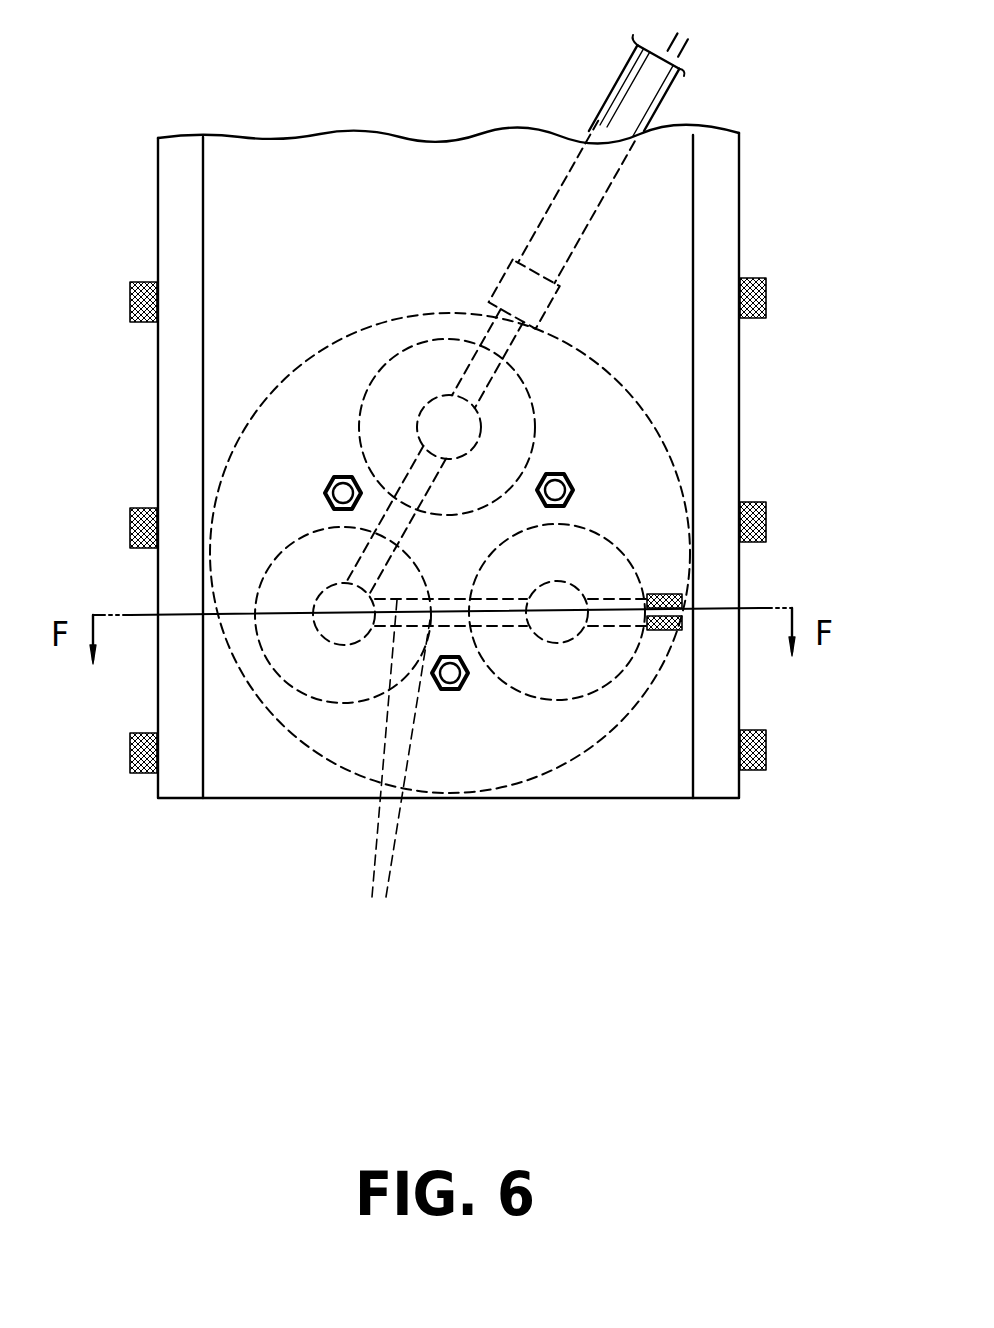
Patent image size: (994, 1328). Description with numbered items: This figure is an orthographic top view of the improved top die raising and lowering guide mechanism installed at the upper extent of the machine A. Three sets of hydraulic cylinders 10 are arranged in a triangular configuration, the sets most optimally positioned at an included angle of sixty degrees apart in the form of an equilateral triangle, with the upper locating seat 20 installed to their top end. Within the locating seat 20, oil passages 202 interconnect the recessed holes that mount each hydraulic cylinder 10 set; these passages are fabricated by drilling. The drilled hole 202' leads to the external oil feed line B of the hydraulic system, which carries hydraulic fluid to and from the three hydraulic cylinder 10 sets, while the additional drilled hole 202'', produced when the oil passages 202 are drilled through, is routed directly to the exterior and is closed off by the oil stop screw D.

The machine A is at (300, 275).
The external oil feed line B is at (623, 100).
The oil stop screw D is at (607, 597).
The hydraulic cylinder 10 is at (410, 347).
The upper locating seat 20 is at (255, 440).
The oil passage 202 is at (437, 632).
The oil passage hole 202' is at (514, 207).
The drilled hole 202'' is at (754, 474).